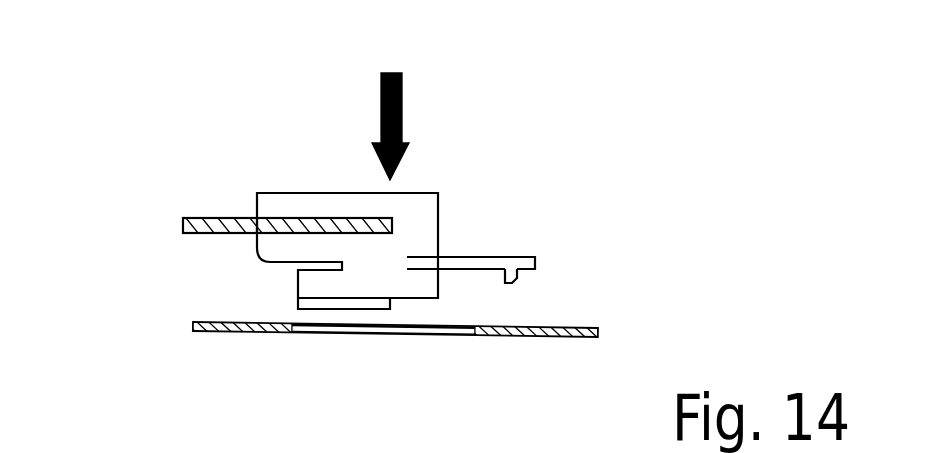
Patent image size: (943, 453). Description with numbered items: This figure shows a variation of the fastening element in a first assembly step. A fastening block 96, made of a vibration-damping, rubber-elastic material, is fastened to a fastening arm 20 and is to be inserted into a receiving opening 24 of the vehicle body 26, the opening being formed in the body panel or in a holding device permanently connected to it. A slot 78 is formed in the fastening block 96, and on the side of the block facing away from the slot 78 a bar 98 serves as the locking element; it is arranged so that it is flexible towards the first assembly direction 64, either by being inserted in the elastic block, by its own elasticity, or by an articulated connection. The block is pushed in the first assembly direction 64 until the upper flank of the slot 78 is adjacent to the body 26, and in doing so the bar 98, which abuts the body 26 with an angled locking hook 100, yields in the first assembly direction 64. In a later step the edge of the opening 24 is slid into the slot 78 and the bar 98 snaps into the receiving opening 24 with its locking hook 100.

The fastening block 96 is at (285, 203).
The first assembly direction 64 is at (402, 115).
The fastening arm 20 is at (200, 217).
The slot 78 is at (340, 263).
The bar 98 is at (467, 262).
The locking hook 100 is at (517, 277).
The body 26 is at (212, 332).
The receiving opening 24 is at (423, 333).